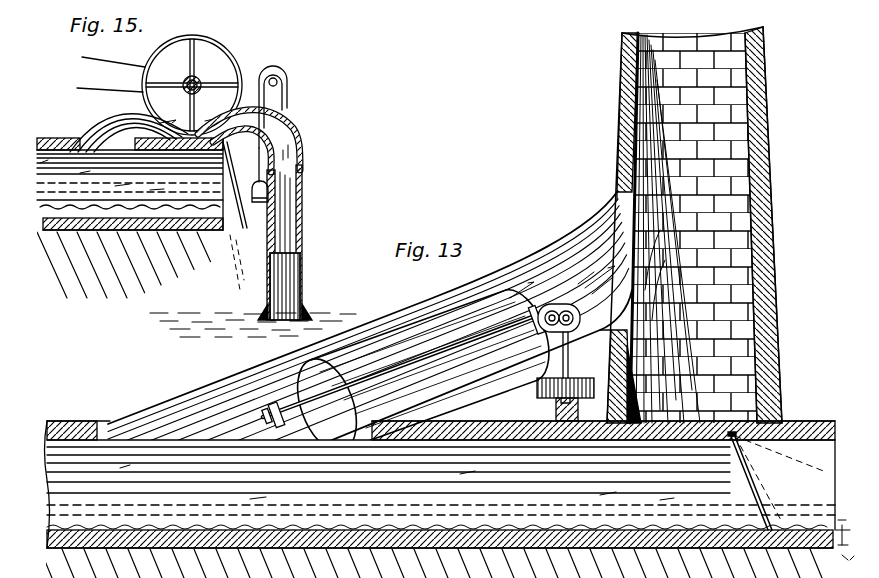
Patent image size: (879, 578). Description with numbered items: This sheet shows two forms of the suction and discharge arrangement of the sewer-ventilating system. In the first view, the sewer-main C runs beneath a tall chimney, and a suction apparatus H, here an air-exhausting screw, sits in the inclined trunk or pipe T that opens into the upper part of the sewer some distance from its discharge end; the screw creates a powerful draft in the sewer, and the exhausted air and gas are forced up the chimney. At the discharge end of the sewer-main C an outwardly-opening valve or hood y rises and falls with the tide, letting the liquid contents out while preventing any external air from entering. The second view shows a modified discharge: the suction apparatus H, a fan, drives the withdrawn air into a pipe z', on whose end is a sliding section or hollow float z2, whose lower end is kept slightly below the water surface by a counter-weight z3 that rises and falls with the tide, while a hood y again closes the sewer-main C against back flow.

In FIG. 15, the suction apparatus H is at (192, 85).
In FIG. 13, the suction apparatus H is at (417, 374).
In FIG. 15, the sewer-mains C is at (132, 218).
In FIG. 13, the sewer-mains C is at (437, 499).
In FIG. 15, the outwardly-opening valve or hood y is at (215, 172).
In FIG. 13, the outwardly-opening valve or hood y is at (777, 481).
In FIG. 13, the trunk or pipe T is at (215, 437).
In FIG. 15, the discharge pipe z' is at (258, 215).
In FIG. 15, the sliding section or hollow float z2 is at (295, 286).
In FIG. 15, the counter-weight z3 is at (253, 175).